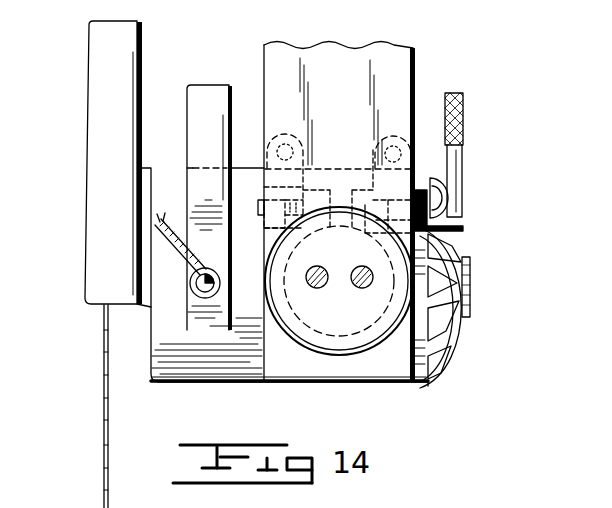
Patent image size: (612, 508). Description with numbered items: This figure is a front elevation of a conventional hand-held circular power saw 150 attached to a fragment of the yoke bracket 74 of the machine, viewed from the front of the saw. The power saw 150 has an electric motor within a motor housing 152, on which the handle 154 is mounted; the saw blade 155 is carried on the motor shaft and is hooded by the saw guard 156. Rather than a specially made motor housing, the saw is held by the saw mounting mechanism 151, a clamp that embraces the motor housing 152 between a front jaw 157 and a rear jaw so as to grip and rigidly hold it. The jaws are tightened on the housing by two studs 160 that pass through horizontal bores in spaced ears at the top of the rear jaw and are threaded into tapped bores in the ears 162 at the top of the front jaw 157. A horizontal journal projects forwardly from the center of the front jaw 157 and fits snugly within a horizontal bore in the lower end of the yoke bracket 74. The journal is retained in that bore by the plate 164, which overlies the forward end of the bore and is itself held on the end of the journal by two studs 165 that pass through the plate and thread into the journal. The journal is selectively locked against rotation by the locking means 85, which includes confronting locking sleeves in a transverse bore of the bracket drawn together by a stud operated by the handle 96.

The yoke bracket 74 is at (417, 63).
The locking means 85 is at (340, 190).
The handle 96 is at (463, 168).
The circular power saw 150 is at (176, 390).
The saw mounting mechanism 151 is at (258, 270).
The motor housing 152 is at (247, 371).
The handle 154 is at (200, 127).
The saw blade 155 is at (103, 459).
The saw guard 156 is at (97, 111).
The front jaw 157 is at (310, 361).
The studs 160 is at (283, 147).
The ears 162 is at (270, 160).
The plate 164 is at (363, 316).
The studs 165 is at (350, 302).